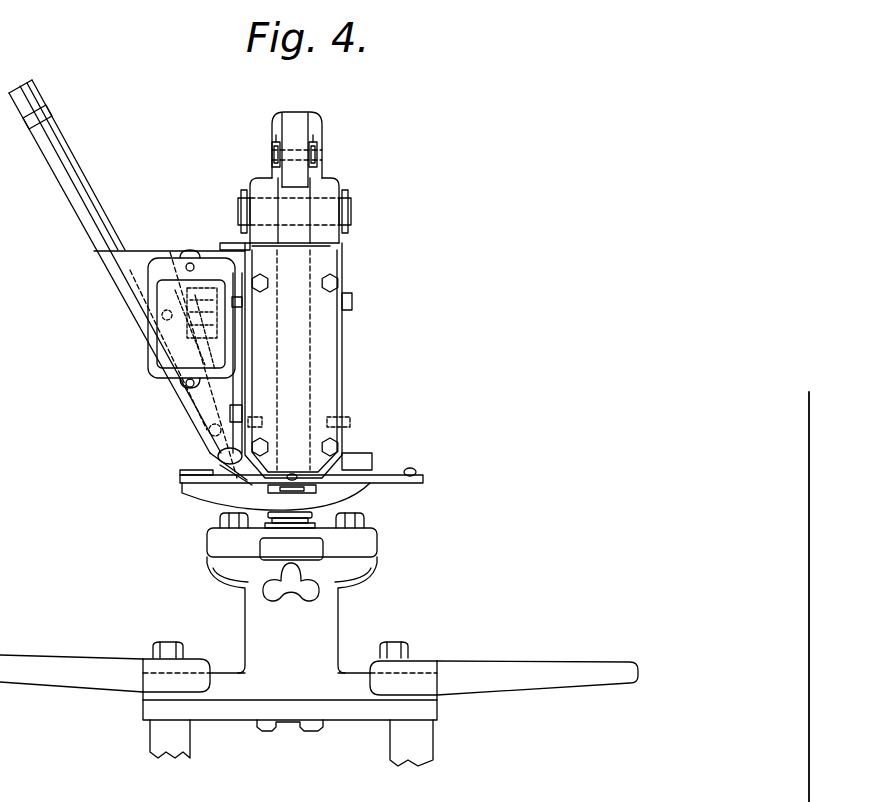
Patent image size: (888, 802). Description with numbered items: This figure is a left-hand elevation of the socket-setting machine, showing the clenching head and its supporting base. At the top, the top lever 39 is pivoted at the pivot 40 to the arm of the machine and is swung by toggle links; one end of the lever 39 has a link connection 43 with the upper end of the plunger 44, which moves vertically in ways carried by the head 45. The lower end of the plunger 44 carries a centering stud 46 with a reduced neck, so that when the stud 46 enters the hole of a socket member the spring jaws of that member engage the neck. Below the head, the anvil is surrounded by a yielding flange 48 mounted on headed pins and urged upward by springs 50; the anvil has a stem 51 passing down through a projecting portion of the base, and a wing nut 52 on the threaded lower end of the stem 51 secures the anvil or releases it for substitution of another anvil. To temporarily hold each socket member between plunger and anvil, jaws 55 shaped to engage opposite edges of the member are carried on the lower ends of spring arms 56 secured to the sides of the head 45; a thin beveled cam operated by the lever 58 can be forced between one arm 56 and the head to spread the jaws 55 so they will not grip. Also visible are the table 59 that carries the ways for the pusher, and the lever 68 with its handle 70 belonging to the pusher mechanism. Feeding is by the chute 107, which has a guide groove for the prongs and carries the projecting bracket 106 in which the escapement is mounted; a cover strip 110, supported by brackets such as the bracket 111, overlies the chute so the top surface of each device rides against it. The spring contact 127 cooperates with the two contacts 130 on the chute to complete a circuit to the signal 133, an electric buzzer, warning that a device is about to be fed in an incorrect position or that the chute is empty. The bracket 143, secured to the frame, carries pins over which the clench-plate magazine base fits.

The top lever 39 is at (297, 123).
The pivot 40 is at (352, 210).
The link connection 43 is at (272, 170).
The plunger 44 is at (297, 236).
The head 45 is at (327, 352).
The centering stud 46 is at (292, 474).
The yielding flange 48 is at (270, 515).
The springs 50 is at (328, 612).
The stem 51 is at (552, 680).
The wing nut 52 is at (152, 748).
The jaws 55 is at (318, 494).
The spring arms 56 is at (342, 437).
The lever 58 is at (218, 454).
The table 59 is at (362, 490).
The lever 68 is at (395, 476).
The handle 70 is at (423, 478).
The bracket 106 is at (110, 287).
The chute 107 is at (70, 207).
The cover strip 110 is at (84, 180).
The bracket 111 is at (50, 115).
The spring contact 127 is at (255, 378).
The contacts 130 is at (165, 388).
The signal 133 is at (172, 270).
The bracket 143 is at (297, 705).